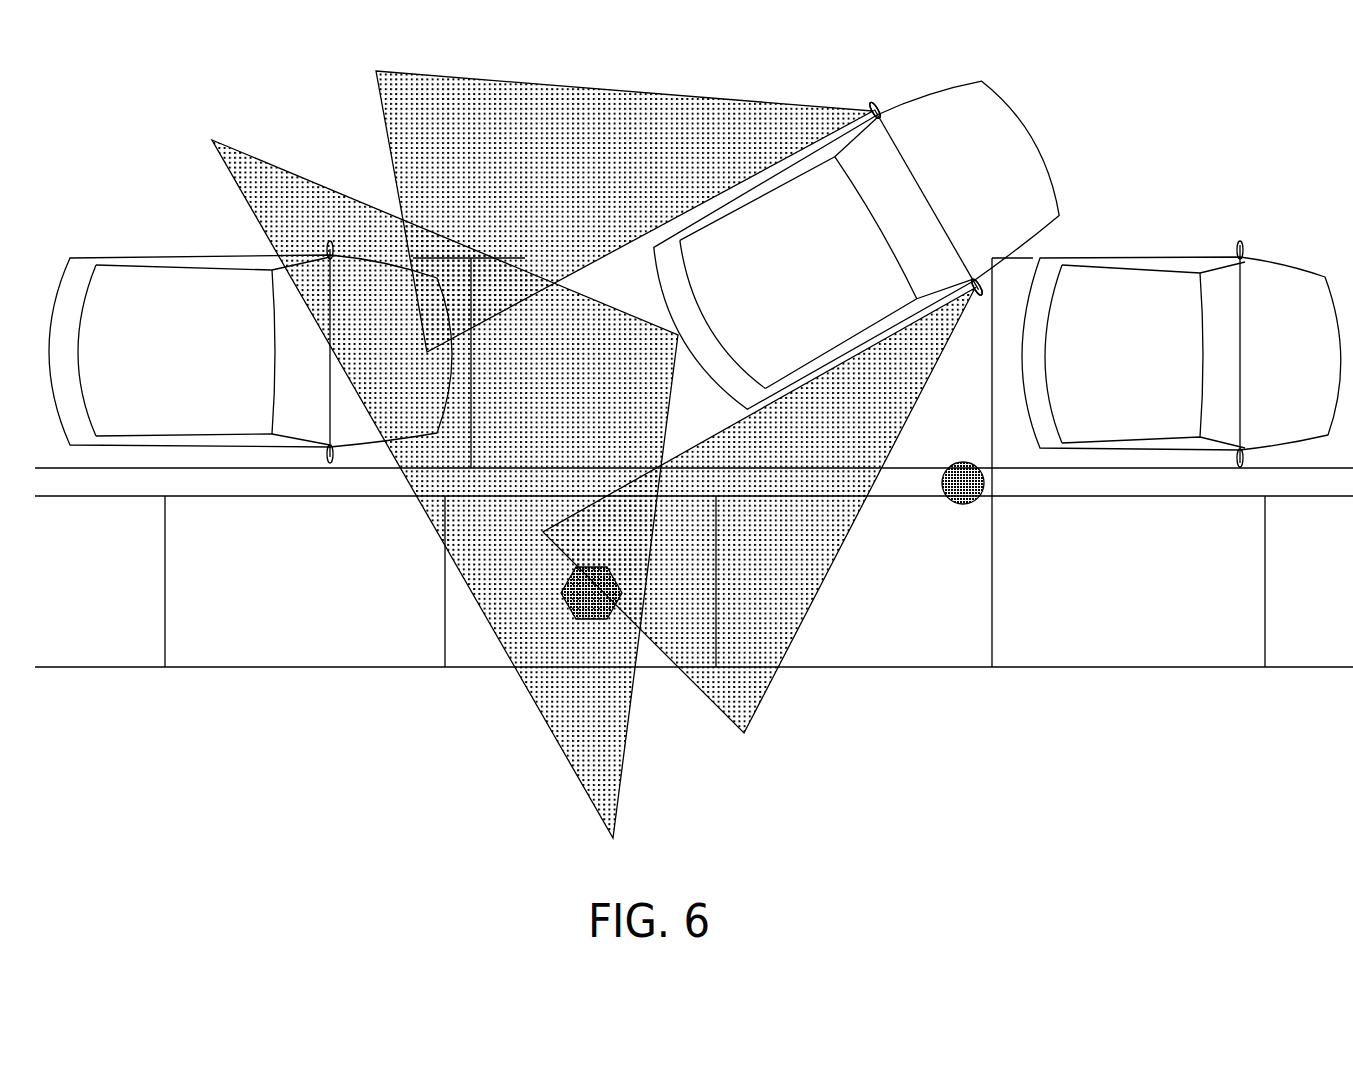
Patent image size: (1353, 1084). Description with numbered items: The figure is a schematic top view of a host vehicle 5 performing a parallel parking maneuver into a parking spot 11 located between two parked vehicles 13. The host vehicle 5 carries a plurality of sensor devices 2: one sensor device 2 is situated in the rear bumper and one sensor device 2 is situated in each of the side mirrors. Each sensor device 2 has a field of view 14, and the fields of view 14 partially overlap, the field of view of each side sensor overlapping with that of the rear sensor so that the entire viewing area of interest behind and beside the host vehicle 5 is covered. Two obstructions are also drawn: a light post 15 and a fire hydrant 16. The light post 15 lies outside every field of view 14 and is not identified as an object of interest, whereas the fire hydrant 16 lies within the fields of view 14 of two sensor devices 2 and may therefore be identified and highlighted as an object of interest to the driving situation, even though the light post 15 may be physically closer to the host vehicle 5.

The sensor device 2 is at (833, 211).
The host vehicle 5 is at (857, 239).
The parking spot 11 is at (690, 412).
The parked vehicle 13 is at (695, 354).
The field of view 14 is at (593, 454).
The obstruction (light post) 15 is at (963, 505).
The obstruction (fire hydrant) 16 is at (591, 614).